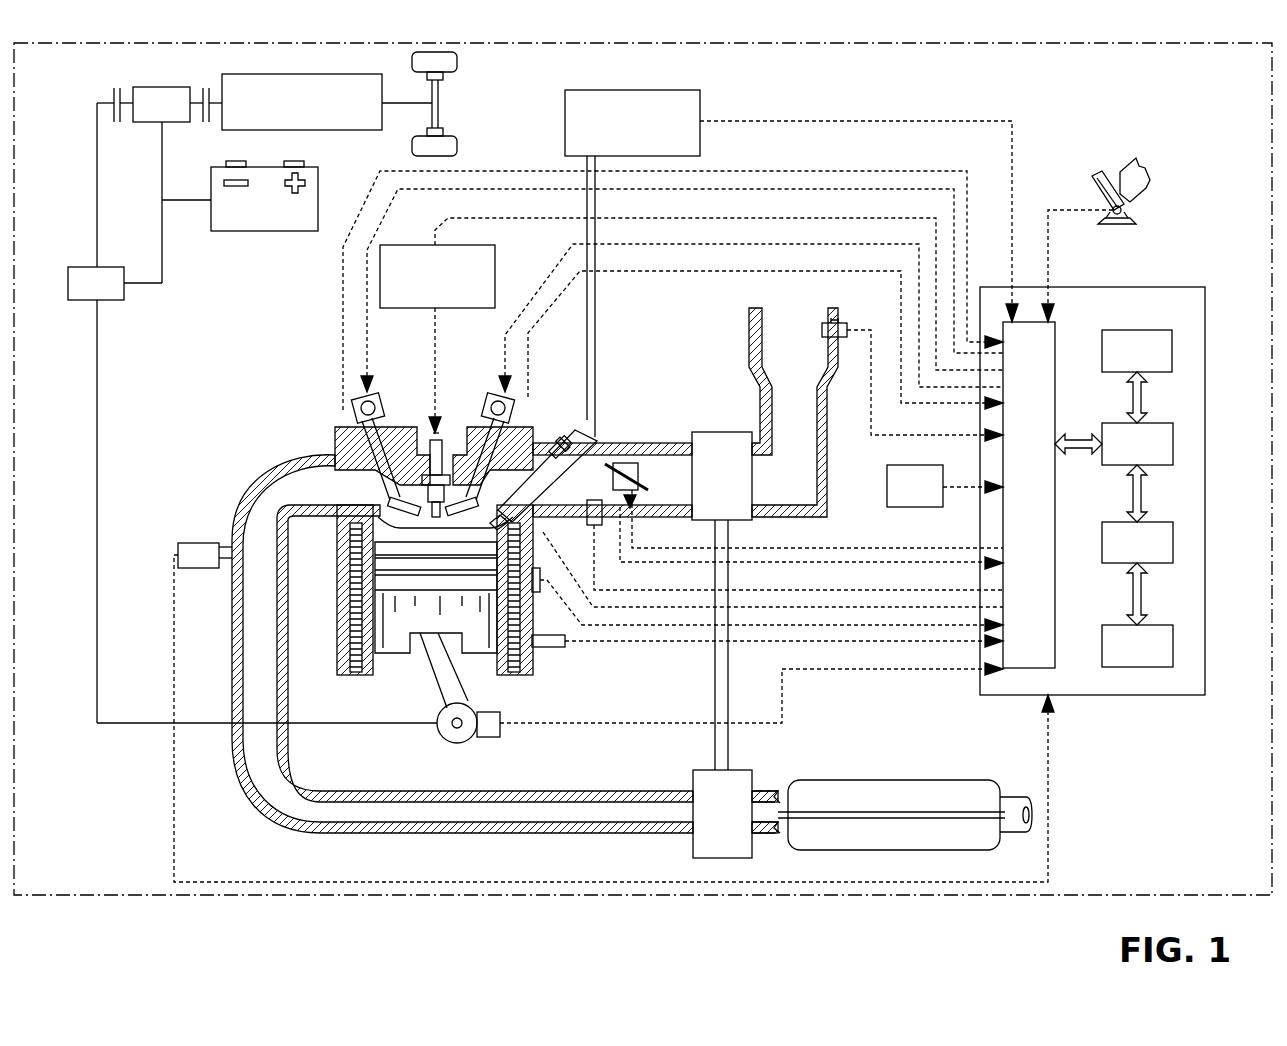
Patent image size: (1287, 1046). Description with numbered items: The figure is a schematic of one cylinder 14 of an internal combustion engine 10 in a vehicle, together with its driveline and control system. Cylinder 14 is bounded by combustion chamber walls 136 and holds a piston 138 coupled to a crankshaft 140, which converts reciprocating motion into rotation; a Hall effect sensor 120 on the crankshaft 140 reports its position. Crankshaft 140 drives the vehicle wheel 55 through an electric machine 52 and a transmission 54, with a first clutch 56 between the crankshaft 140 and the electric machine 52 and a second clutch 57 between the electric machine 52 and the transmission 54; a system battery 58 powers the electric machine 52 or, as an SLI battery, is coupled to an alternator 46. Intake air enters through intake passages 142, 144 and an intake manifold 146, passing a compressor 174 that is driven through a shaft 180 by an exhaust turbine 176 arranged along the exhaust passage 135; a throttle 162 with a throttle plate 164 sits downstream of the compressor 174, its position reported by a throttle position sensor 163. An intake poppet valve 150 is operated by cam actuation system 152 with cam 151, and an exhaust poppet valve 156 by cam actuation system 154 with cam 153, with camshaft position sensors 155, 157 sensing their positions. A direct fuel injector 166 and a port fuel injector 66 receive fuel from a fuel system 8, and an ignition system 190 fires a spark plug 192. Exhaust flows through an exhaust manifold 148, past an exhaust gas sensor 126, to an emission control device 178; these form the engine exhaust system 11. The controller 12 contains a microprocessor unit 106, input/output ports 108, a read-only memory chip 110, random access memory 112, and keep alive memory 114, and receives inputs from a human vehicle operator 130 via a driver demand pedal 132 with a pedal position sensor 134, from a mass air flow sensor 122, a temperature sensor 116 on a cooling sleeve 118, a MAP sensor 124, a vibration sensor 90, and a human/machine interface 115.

The fuel system 8 is at (665, 90).
The internal combustion engine 10 is at (266, 376).
The engine exhaust system 11 is at (224, 498).
The controller 12 is at (1205, 290).
The cylinder 14 is at (433, 523).
The alternator 46 is at (70, 302).
The electric machine 52 is at (155, 86).
The transmission 54 is at (362, 130).
The vehicle wheel 55 is at (412, 60).
The first clutch 56 is at (116, 92).
The second clutch 57 is at (204, 90).
The system battery 58 is at (262, 232).
The port fuel injector 66 is at (556, 440).
The sensor 90 is at (545, 648).
The microprocessor unit 106 is at (1173, 436).
The input/output ports 108 is at (1055, 322).
The read-only memory chip 110 is at (1172, 350).
The random access memory 112 is at (1173, 538).
The keep alive memory 114 is at (1173, 646).
The human/machine interface 115 is at (945, 486).
The temperature sensor 116 is at (540, 590).
The cooling sleeve 118 is at (522, 640).
The Hall effect sensor 120 is at (490, 740).
The mass air flow sensor 122 is at (840, 323).
The MAP sensor 124 is at (598, 542).
The exhaust gas sensor 126 is at (178, 548).
The human vehicle operator 130 is at (1150, 178).
The driver demand pedal 132 is at (1096, 186).
The pedal position sensor 134 is at (1130, 212).
The exhaust passage 135 is at (608, 790).
The combustion chamber walls 136 is at (376, 682).
The piston 138 is at (418, 640).
The crankshaft 140 is at (444, 742).
The intake passage 142 is at (793, 412).
The intake passage 144 is at (670, 478).
The intake manifold 146 is at (572, 472).
The exhaust manifold 148 is at (362, 462).
The intake poppet valve 150 is at (445, 478).
The cam 151 is at (488, 404).
The cam actuation system 152 is at (498, 378).
The cam 153 is at (381, 404).
The cam actuation system 154 is at (380, 378).
The camshaft position sensor 155 is at (514, 412).
The exhaust poppet valve 156 is at (356, 440).
The camshaft position sensor 157 is at (346, 402).
The throttle 162 is at (634, 462).
The throttle position sensor 163 is at (634, 508).
The throttle plate 164 is at (614, 462).
The direct fuel injector 166 is at (550, 462).
The compressor 174 is at (722, 476).
The exhaust turbine 176 is at (722, 814).
The emission control device 178 is at (955, 780).
The shaft 180 is at (732, 738).
The ignition system 190 is at (394, 245).
The spark plug 192 is at (430, 462).